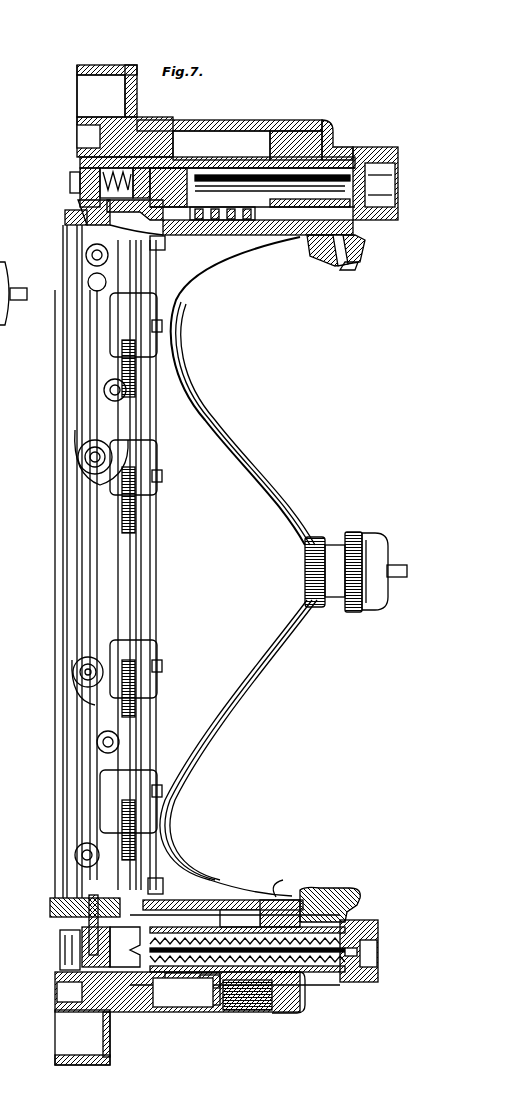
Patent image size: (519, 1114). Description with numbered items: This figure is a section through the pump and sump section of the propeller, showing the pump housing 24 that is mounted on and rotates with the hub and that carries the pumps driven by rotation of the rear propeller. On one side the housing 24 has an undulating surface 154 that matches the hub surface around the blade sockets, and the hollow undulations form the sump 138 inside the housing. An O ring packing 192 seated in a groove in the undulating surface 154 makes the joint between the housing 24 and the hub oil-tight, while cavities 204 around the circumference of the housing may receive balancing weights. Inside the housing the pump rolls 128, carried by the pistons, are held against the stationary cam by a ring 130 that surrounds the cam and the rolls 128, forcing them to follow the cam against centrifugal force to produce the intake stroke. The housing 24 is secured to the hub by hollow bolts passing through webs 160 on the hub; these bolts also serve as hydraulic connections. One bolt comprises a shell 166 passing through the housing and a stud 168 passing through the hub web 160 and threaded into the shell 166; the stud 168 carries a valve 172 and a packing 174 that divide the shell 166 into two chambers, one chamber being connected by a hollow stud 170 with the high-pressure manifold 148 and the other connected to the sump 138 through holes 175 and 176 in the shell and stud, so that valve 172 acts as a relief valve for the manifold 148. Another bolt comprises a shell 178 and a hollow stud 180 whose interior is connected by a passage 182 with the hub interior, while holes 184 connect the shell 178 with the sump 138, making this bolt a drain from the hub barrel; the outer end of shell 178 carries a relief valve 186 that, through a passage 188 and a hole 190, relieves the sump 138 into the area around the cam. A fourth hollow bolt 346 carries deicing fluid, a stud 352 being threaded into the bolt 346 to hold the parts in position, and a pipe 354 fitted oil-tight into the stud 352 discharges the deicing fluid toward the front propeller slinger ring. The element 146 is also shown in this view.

The housing 24 is at (113, 63).
The cavities 204 is at (90, 100).
The sump 138 is at (200, 143).
The shell 178 is at (238, 147).
The hollow stud 180 is at (380, 150).
The relief valve 186 is at (196, 182).
The holes 184 is at (248, 218).
The webs 160 is at (348, 262).
The passage 182 is at (365, 252).
The hole 190 is at (70, 215).
The passage 188 is at (170, 240).
The ring 130 is at (178, 255).
The rolls 128 is at (140, 520).
The bearing 146 is at (80, 458).
The manifold 148 is at (88, 790).
The pipe 354 is at (17, 290).
The stud 352 is at (12, 308).
The hollow bolt 346 is at (312, 540).
The undulating surface 154 is at (244, 690).
The hollow stud 170 is at (78, 913).
The packing 174 is at (156, 921).
The valve 172 is at (123, 947).
The holes 175 is at (200, 985).
The holes 176 is at (212, 1005).
The shell 166 is at (70, 968).
The stud 168 is at (10, 806).
The O ring packing 192 is at (289, 887).